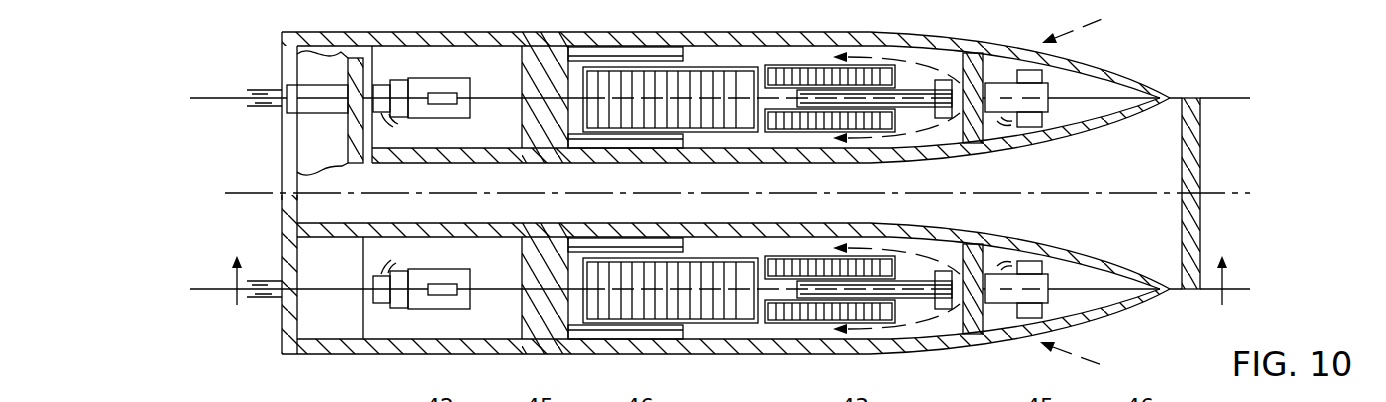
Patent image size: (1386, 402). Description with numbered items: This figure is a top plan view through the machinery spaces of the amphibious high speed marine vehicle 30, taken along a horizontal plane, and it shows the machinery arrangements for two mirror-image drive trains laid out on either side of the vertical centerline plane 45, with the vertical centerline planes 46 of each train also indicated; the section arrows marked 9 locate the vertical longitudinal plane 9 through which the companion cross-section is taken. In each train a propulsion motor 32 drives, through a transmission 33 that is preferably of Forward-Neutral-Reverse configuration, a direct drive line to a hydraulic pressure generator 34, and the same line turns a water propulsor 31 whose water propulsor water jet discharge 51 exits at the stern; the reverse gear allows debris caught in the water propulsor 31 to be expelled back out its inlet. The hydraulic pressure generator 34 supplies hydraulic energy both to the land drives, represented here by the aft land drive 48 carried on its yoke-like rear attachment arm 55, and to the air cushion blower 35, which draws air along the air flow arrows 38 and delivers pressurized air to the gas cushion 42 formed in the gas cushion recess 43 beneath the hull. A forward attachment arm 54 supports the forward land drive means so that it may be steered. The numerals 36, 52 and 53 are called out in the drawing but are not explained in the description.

The vertical longitudinal plane 9— 9 is at (729, 266).
The amphibious high speed marine vehicle 30 is at (971, 48).
The water propulsor 31 is at (298, 88).
The propulsion motor 32 is at (463, 86).
The transmission 33 is at (395, 80).
The hydraulic pressure generator 34 is at (376, 83).
The air cushion blower 35 is at (1045, 95).
The bearing lead wires 36 is at (1038, 119).
The air flow arrows 38 is at (903, 60).
The gas cushion 42 is at (710, 60).
The gas cushion recess 43 is at (800, 56).
The vertical centerline plane 45 is at (1032, 192).
The vertical centerline planes 46 is at (1227, 95).
The aft land drive 48 is at (846, 298).
The water propulsor water jet discharge 51 is at (262, 106).
The rotor magnet 52 is at (830, 351).
The stator winding 53 is at (767, 330).
The forward attachment arm 54 is at (889, 331).
The rear attachment arm 55 is at (612, 52).